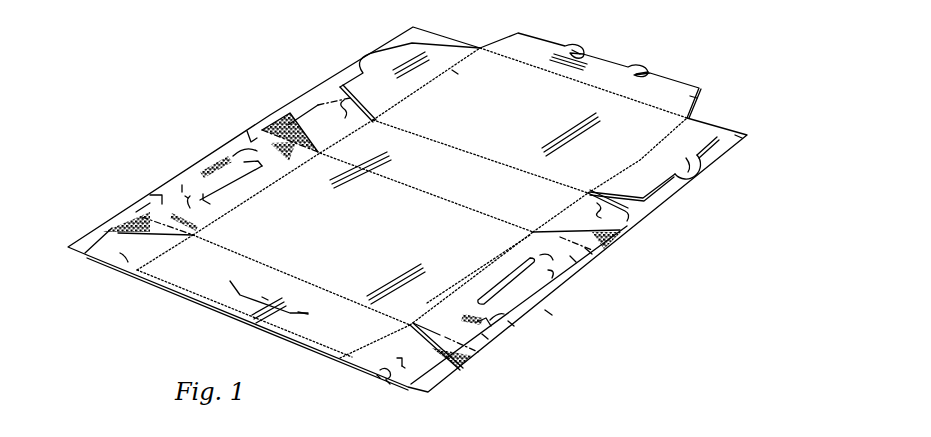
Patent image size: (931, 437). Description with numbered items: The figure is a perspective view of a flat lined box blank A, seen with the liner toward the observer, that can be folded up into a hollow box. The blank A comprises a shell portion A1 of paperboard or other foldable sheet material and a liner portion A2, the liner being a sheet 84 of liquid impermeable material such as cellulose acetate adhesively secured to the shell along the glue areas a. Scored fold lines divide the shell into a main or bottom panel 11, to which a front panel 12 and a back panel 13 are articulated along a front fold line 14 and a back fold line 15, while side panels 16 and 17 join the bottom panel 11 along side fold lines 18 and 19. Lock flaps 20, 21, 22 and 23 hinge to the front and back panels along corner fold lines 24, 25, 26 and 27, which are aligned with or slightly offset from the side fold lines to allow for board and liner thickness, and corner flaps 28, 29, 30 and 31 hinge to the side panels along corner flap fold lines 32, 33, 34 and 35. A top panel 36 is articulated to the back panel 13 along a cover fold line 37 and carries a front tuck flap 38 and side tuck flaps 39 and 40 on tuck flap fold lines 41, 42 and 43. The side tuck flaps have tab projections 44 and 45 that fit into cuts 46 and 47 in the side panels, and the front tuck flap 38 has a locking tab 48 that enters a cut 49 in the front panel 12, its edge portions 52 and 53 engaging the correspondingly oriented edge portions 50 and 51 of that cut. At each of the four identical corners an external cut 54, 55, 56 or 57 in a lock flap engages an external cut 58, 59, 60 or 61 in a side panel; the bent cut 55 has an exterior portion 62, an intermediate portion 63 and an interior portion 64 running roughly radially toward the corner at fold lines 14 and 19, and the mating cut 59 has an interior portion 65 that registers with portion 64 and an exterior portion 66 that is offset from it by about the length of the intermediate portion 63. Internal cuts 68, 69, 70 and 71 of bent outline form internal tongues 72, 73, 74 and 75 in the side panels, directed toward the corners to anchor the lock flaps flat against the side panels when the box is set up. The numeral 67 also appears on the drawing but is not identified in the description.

The main or bottom panel 11 is at (366, 240).
The front panel 12 is at (284, 303).
The back panel 13 is at (452, 185).
The front fold line 14 is at (342, 293).
The back fold line 15 is at (440, 203).
The side panel 16 is at (200, 180).
The side panel 17 is at (452, 310).
The side fold line 18 is at (253, 198).
The side fold line 19 is at (470, 270).
The lock flap 20 is at (112, 258).
The lock flap 21 is at (399, 353).
The lock flap 22 is at (312, 128).
The lock flap 23 is at (584, 230).
The corner fold line 24 is at (170, 255).
The corner fold line 25 is at (380, 342).
The corner fold line 26 is at (352, 135).
The corner fold line 27 is at (540, 218).
The corner flap 28 is at (124, 228).
The corner flap 29 is at (446, 360).
The corner flap 30 is at (274, 135).
The corner flap 31 is at (586, 248).
The corner flap fold line 32 is at (138, 210).
The corner flap fold line 33 is at (418, 322).
The corner flap fold line 34 is at (272, 160).
The corner flap fold line 35 is at (583, 250).
The top panel 36 is at (524, 128).
The cover fold line 37 is at (480, 150).
The front tuck flap 38 is at (592, 82).
The side tuck flap 39 is at (402, 58).
The side tuck flap 40 is at (697, 125).
The tuck flap fold line 41 is at (543, 68).
The tuck flap fold line 42 is at (420, 97).
The tuck flap fold line 43 is at (617, 163).
The tab projection 44 is at (373, 54).
The tab projection 45 is at (697, 163).
The cut 46 is at (228, 185).
The cut 47 is at (492, 285).
The locking tab 48 is at (605, 65).
The cut 49 is at (265, 300).
The edge portion 50 is at (233, 283).
The edge portion 51 is at (308, 314).
The edge portion 52 is at (578, 47).
The edge portion 53 is at (645, 70).
The external cut 54 is at (127, 260).
The external cut 55 is at (403, 366).
The external cut 56 is at (345, 120).
The external cut 57 is at (597, 210).
The external cut 58 is at (155, 195).
The external cut 59 is at (493, 327).
The external cut 60 is at (248, 138).
The external cut 61 is at (570, 258).
The exterior portion 62 is at (377, 376).
The intermediate portion 63 is at (380, 371).
The interior portion 64 is at (397, 358).
The interior portion 65 is at (485, 337).
The exterior portion 66 is at (510, 323).
The cut line 67 is at (387, 382).
The internal cut 68 is at (190, 205).
The internal cut 69 is at (480, 317).
The internal cut 70 is at (258, 160).
The internal cut 71 is at (548, 258).
The internal tongue 72 is at (185, 190).
The internal tongue 73 is at (495, 317).
The internal tongue 74 is at (240, 152).
The internal tongue 75 is at (550, 272).
The sheet 84 is at (420, 32).
The glue areas a is at (456, 71).
The box blank A is at (548, 312).
The shell portion A1 is at (690, 92).
The liner portion A2 is at (740, 136).